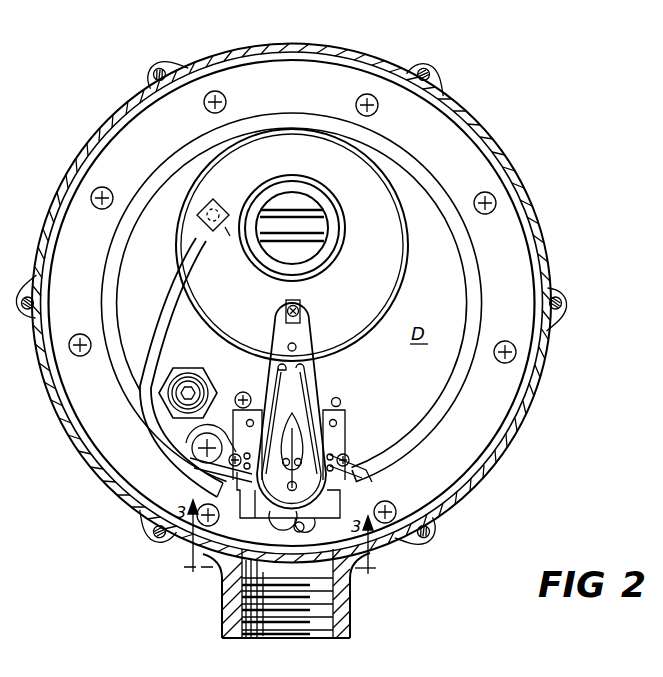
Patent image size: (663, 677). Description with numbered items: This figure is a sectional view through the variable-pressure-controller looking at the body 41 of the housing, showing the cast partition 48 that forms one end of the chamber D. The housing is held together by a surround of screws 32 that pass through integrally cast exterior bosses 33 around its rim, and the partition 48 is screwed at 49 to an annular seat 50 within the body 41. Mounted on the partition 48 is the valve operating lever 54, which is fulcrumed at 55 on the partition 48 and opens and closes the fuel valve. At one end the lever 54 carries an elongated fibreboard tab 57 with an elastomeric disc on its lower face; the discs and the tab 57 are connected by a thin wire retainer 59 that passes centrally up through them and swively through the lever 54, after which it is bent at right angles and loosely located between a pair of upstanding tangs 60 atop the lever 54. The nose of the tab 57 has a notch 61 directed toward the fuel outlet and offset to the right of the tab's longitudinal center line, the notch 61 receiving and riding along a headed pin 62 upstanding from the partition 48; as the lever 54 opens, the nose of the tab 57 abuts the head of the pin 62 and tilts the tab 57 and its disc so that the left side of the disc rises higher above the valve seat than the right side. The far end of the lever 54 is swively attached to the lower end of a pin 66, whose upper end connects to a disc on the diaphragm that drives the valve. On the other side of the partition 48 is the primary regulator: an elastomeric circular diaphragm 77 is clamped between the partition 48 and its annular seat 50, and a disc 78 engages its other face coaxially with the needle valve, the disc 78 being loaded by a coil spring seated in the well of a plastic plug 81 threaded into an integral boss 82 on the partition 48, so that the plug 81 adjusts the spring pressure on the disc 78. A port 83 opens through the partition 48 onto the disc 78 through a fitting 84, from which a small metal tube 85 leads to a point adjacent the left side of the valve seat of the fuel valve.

The screws 32 is at (420, 70).
The exterior bosses 33 is at (438, 82).
The body 41 is at (492, 140).
The partition 48 is at (300, 80).
The screws 49 is at (112, 186).
The annular seat 50 is at (518, 206).
The valve operating lever 54 is at (300, 378).
The fulcrum 55 is at (249, 445).
The fibreboard tab 57 is at (268, 521).
The wire retainer 59 is at (348, 466).
The tangs 60 is at (289, 442).
The notch 61 is at (305, 531).
The headed pin 62 is at (286, 530).
The pin 66 is at (302, 311).
The diaphragm 77 is at (430, 388).
The disc 78 is at (372, 264).
The plastic plug 81 is at (292, 208).
The boss 82 is at (326, 206).
The port 83 is at (218, 201).
The fitting 84 is at (224, 237).
The metal tube 85 is at (162, 330).